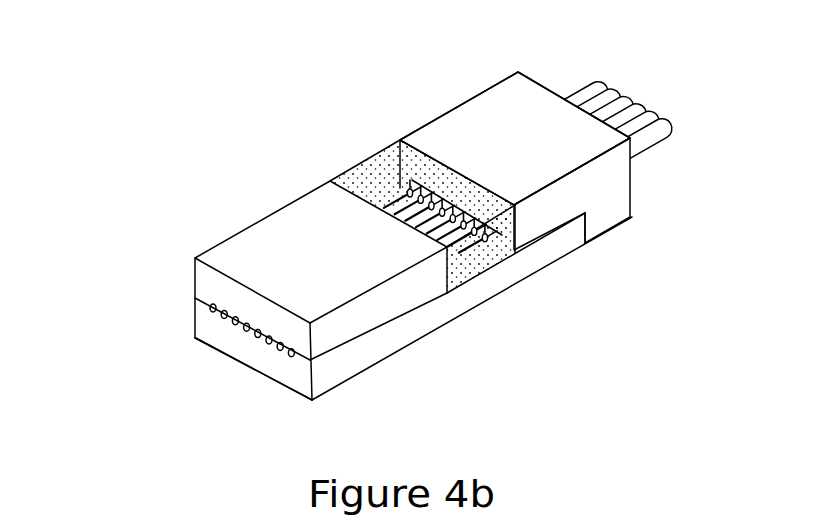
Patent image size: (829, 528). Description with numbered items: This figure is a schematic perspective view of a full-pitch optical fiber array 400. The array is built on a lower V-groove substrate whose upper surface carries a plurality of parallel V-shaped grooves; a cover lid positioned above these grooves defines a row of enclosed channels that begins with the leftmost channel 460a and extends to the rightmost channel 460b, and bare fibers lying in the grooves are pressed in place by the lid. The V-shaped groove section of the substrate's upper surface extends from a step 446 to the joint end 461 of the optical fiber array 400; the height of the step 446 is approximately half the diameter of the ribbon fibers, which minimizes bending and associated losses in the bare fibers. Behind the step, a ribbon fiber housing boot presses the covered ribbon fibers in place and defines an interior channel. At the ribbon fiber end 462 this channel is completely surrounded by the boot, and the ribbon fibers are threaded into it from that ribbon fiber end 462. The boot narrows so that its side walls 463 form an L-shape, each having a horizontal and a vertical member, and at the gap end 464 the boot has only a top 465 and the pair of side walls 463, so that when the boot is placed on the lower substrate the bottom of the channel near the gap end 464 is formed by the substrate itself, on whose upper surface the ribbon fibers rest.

The optical fiber array 400 is at (184, 221).
The step 446 is at (449, 297).
The leftmost channel 460a is at (205, 309).
The rightmost channel 460b is at (293, 353).
The joint end 461 is at (293, 382).
The ribbon fiber end 462 is at (643, 187).
The side walls 463 is at (487, 89).
The gap end 464 is at (412, 162).
The top 465 is at (475, 138).